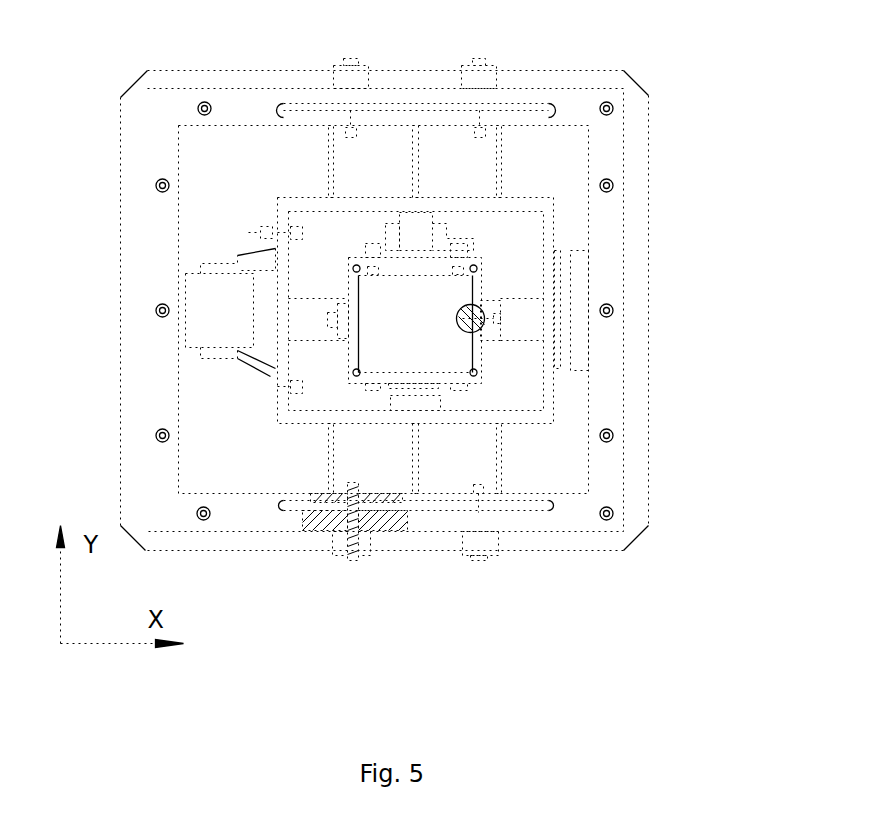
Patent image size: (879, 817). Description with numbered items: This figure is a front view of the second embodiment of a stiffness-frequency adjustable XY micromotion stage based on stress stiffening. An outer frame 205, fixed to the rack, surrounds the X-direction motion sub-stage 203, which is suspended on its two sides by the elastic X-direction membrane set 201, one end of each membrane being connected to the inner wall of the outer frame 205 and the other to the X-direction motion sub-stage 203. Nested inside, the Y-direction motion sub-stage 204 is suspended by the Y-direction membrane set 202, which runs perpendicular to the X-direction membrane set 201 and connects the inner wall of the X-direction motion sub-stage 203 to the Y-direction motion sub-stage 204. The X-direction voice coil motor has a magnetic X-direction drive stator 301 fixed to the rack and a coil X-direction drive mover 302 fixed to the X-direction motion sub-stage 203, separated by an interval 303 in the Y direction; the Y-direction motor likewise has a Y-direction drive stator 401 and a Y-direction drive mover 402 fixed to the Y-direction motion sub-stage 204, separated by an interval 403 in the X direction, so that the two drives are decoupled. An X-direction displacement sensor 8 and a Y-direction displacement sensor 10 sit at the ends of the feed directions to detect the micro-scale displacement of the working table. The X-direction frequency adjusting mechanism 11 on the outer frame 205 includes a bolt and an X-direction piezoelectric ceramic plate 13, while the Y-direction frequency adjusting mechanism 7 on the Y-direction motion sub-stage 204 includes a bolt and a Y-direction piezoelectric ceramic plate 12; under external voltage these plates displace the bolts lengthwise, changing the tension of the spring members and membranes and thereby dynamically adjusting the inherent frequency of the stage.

The Y-direction frequency adjusting mechanism 7 is at (497, 314).
The X-direction displacement sensor 8 is at (577, 349).
The Y-direction displacement sensor 10 is at (430, 401).
The X-direction frequency adjusting mechanism 11 is at (357, 560).
The Y-direction piezoelectric ceramic plate 12 is at (488, 331).
The X-direction piezoelectric ceramic plate 13 is at (340, 543).
The X-direction membrane set 201 is at (414, 467).
The Y-direction membrane set 202 is at (310, 340).
The X-direction motion sub-stage 203 is at (283, 206).
The Y-direction motion sub-stage 204 is at (364, 261).
The outer frame 205 is at (278, 101).
The X-direction drive stator 301 is at (217, 317).
The X-direction drive mover 302 is at (218, 267).
The interval 303 is at (243, 348).
The Y-direction drive stator 401 is at (416, 228).
The Y-direction drive mover 402 is at (436, 230).
The interval 403 is at (394, 245).